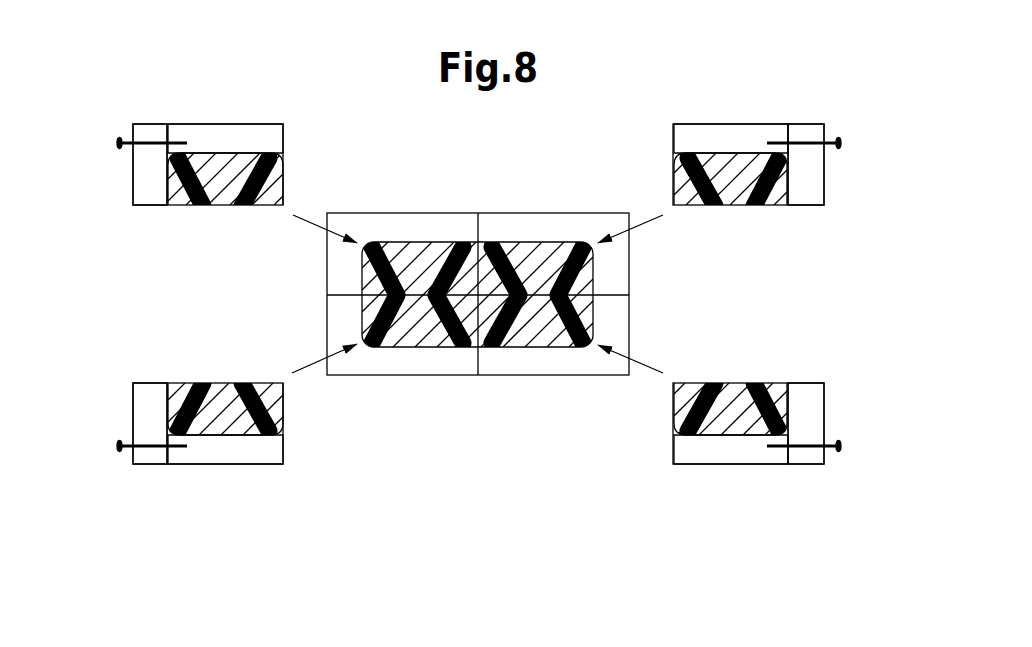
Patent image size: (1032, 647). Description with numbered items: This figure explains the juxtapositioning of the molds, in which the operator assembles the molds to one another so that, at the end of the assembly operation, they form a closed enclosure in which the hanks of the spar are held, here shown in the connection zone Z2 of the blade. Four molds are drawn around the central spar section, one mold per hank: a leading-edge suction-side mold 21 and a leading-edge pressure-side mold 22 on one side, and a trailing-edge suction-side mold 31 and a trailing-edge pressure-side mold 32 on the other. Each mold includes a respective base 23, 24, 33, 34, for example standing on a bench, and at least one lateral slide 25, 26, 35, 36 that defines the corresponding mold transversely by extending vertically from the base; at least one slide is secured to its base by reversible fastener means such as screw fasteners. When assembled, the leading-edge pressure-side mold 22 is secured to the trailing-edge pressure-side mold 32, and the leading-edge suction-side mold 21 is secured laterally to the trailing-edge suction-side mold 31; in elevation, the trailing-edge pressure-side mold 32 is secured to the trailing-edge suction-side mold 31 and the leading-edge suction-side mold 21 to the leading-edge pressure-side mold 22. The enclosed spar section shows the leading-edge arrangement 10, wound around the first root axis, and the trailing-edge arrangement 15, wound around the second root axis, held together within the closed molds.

The leading-edge arrangement 10 is at (367, 347).
The trailing-edge arrangement 15 is at (512, 347).
The leading-edge suction-side mold 21 is at (178, 92).
The leading-edge pressure-side mold 22 is at (178, 362).
The base 23 is at (225, 132).
The base 24 is at (225, 457).
The lateral slide 25 is at (148, 180).
The lateral slide 26 is at (148, 409).
The trailing-edge suction-side mold 31 is at (771, 103).
The trailing-edge pressure-side mold 32 is at (771, 353).
The base 33 is at (731, 132).
The base 34 is at (731, 457).
The lateral slide 35 is at (808, 180).
The lateral slide 36 is at (808, 409).
The connection zone Z2 is at (158, 443).